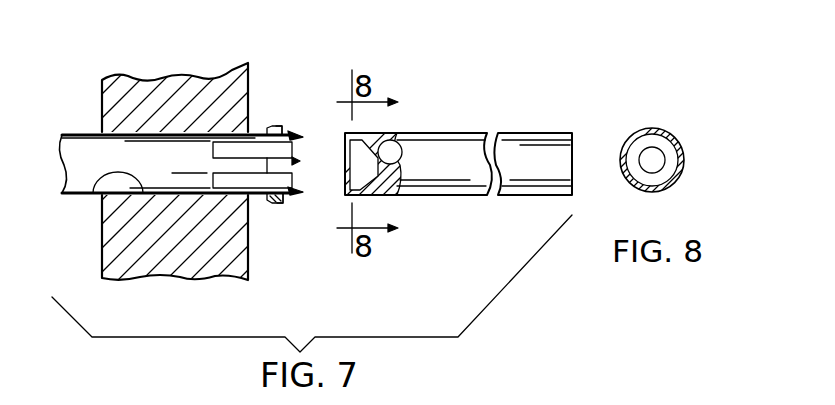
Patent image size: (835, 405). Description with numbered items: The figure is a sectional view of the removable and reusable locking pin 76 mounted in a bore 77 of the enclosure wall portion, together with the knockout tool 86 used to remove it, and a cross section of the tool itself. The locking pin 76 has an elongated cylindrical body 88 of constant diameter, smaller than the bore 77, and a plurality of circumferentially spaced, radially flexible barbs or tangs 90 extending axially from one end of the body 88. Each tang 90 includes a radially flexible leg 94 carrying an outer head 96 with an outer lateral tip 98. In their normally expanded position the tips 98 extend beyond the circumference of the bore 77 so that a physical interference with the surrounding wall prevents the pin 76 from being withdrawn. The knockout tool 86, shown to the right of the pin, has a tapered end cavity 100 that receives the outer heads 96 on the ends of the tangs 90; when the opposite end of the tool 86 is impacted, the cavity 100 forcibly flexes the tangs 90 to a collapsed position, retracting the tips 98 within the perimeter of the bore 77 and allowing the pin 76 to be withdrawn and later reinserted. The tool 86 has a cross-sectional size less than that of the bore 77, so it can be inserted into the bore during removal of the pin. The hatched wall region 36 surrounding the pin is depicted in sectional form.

In FIG. 7, the housing wall 36 is at (150, 270).
In FIG. 7, the locking pin 76 is at (87, 131).
In FIG. 7, the bore 77 is at (98, 190).
In FIG. 7, the knockout tool 86 is at (471, 198).
In FIG. 8, the knockout tool 86 is at (676, 137).
In FIG. 7, the elongated cylindrical body 88 is at (117, 167).
In FIG. 7, the radially flexible barbs or tangs 90 is at (300, 188).
In FIG. 7, the radially flexible leg 94 is at (252, 148).
In FIG. 7, the outer head 96 is at (282, 128).
In FIG. 7, the outer lateral tip 98 is at (271, 126).
In FIG. 7, the tapered end cavity 100 is at (407, 138).
In FIG. 8, the tapered end cavity 100 is at (640, 145).